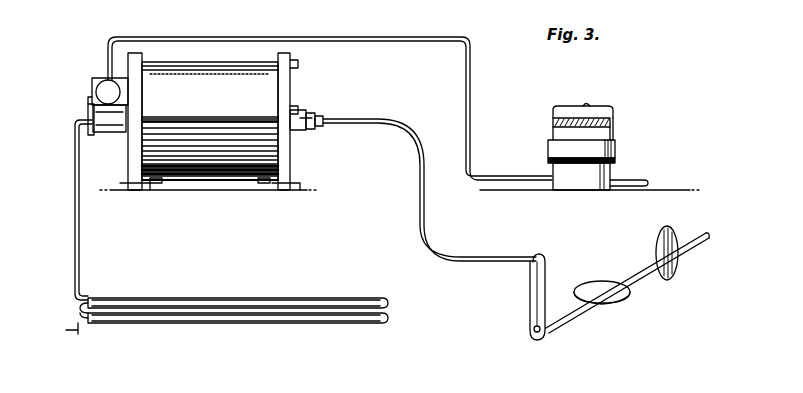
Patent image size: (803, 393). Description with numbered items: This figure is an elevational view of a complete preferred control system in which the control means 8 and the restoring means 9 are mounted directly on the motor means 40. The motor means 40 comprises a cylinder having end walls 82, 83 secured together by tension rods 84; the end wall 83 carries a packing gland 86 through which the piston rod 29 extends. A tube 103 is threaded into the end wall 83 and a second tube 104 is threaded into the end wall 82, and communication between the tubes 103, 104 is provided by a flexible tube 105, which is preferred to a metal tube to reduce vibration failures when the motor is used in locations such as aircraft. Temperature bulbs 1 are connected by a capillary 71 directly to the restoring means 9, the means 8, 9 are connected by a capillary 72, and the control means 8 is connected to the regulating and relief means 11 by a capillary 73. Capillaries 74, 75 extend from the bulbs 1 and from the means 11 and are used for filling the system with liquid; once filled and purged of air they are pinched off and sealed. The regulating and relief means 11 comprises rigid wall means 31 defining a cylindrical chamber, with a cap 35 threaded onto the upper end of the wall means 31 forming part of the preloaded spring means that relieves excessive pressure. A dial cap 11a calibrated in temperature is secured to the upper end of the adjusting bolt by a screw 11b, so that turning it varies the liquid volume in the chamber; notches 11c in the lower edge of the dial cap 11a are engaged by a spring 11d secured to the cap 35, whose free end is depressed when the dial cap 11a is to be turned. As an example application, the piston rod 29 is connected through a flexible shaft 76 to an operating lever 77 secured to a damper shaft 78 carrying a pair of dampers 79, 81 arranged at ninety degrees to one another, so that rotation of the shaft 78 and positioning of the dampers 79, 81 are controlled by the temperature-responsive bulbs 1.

The temperature bulbs 1 is at (246, 300).
The control means 8 is at (96, 82).
The restoring means 9 is at (106, 135).
The regulating and relief means 11 is at (598, 125).
The dial cap 11a is at (612, 116).
The screw 11b is at (587, 103).
The notches 11c is at (560, 137).
The spring 11d is at (622, 137).
The piston rod 29 is at (322, 111).
The wall means 31 is at (556, 166).
The cap 35 is at (549, 148).
The motor means 40 is at (210, 58).
The capillary 71 is at (75, 233).
The capillary 72 is at (91, 97).
The capillary 73 is at (290, 37).
The capillary 74 is at (76, 331).
The capillary 75 is at (644, 179).
The flexible shaft 76 is at (420, 228).
The operating lever 77 is at (530, 298).
The damper shaft 78 is at (575, 312).
The damper 79 is at (614, 305).
The damper 81 is at (680, 273).
The end wall 82 is at (134, 52).
The end wall 83 is at (291, 76).
The tension rods 84 is at (170, 58).
The packing gland 86 is at (316, 130).
The tube 103 is at (268, 183).
The second tube 104 is at (152, 183).
The flexible tube 105 is at (222, 182).